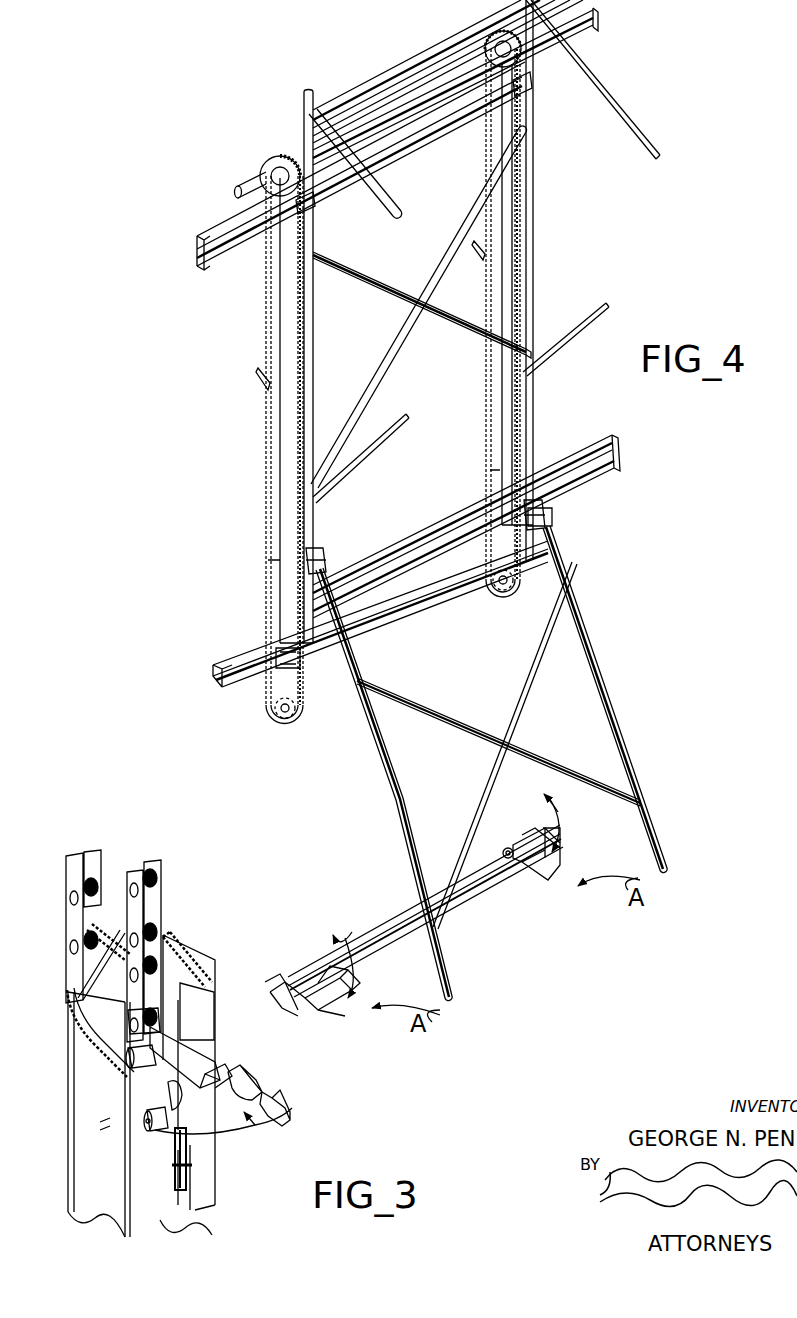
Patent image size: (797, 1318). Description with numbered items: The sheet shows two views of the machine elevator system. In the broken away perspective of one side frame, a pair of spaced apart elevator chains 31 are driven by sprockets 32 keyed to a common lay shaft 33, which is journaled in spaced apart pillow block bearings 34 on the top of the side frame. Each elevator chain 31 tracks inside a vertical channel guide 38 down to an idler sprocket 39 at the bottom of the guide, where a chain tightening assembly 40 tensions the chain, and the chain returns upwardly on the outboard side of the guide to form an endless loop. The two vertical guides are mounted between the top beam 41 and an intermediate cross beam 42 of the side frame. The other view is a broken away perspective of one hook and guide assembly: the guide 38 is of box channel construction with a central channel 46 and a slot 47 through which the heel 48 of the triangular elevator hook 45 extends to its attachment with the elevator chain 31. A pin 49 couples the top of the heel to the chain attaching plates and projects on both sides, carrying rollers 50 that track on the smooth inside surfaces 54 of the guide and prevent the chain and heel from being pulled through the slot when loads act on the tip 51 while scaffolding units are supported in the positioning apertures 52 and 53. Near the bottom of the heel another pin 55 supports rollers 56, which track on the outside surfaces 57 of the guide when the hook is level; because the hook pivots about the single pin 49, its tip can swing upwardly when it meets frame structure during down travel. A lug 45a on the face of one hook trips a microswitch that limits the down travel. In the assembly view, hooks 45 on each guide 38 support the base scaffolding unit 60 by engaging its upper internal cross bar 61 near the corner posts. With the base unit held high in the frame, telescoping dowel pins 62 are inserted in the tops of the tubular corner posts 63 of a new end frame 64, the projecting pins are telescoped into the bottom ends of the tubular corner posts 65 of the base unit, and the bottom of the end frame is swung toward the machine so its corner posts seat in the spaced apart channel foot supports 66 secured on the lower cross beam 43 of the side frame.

In FIG. 4, the elevator chain 31 is at (266, 240).
In FIG. 3, the elevator chain 31 is at (68, 958).
In FIG. 4, the sprocket 32 is at (266, 176).
In FIG. 4, the lay shaft 33 is at (388, 125).
In FIG. 4, the pillow block bearing 34 is at (292, 158).
In FIG. 4, the vertical channel guide 38 is at (268, 560).
In FIG. 3, the vertical channel guide 38 is at (218, 993).
In FIG. 4, the idler sprocket 39 is at (298, 722).
In FIG. 4, the chain tightening assembly 40 is at (296, 664).
In FIG. 4, the top beam 41 is at (236, 228).
In FIG. 4, the intermediate cross beam 42 is at (238, 660).
In FIG. 4, the lower cross beam 43 is at (395, 932).
In FIG. 4, the elevator hook 45 is at (314, 208).
In FIG. 3, the elevator hook 45 is at (240, 1110).
In FIG. 3, the lug 45a is at (180, 1098).
In FIG. 3, the central channel 46 is at (178, 962).
In FIG. 3, the slot 47 is at (190, 1165).
In FIG. 3, the heel 48 is at (180, 1043).
In FIG. 3, the pin 49 is at (128, 1048).
In FIG. 3, the roller 50 is at (171, 1050).
In FIG. 3, the tip 51 is at (284, 1106).
In FIG. 3, the positioning aperture 52 is at (250, 1090).
In FIG. 3, the positioning aperture 53 is at (218, 1075).
In FIG. 3, the inside surface 54 is at (200, 985).
In FIG. 3, the pin 55 is at (144, 1125).
In FIG. 3, the roller 56 is at (170, 1121).
In FIG. 3, the outside surface 57 is at (150, 1205).
In FIG. 4, the base scaffolding unit 60 is at (432, 321).
In FIG. 4, the upper internal cross bar 61 is at (402, 152).
In FIG. 4, the telescoping dowel pin 62 is at (327, 560).
In FIG. 4, the tubular corner post 63 is at (380, 799).
In FIG. 4, the end frame 64 is at (502, 763).
In FIG. 4, the tubular corner post 65 is at (313, 392).
In FIG. 4, the channel foot support 66 is at (562, 870).